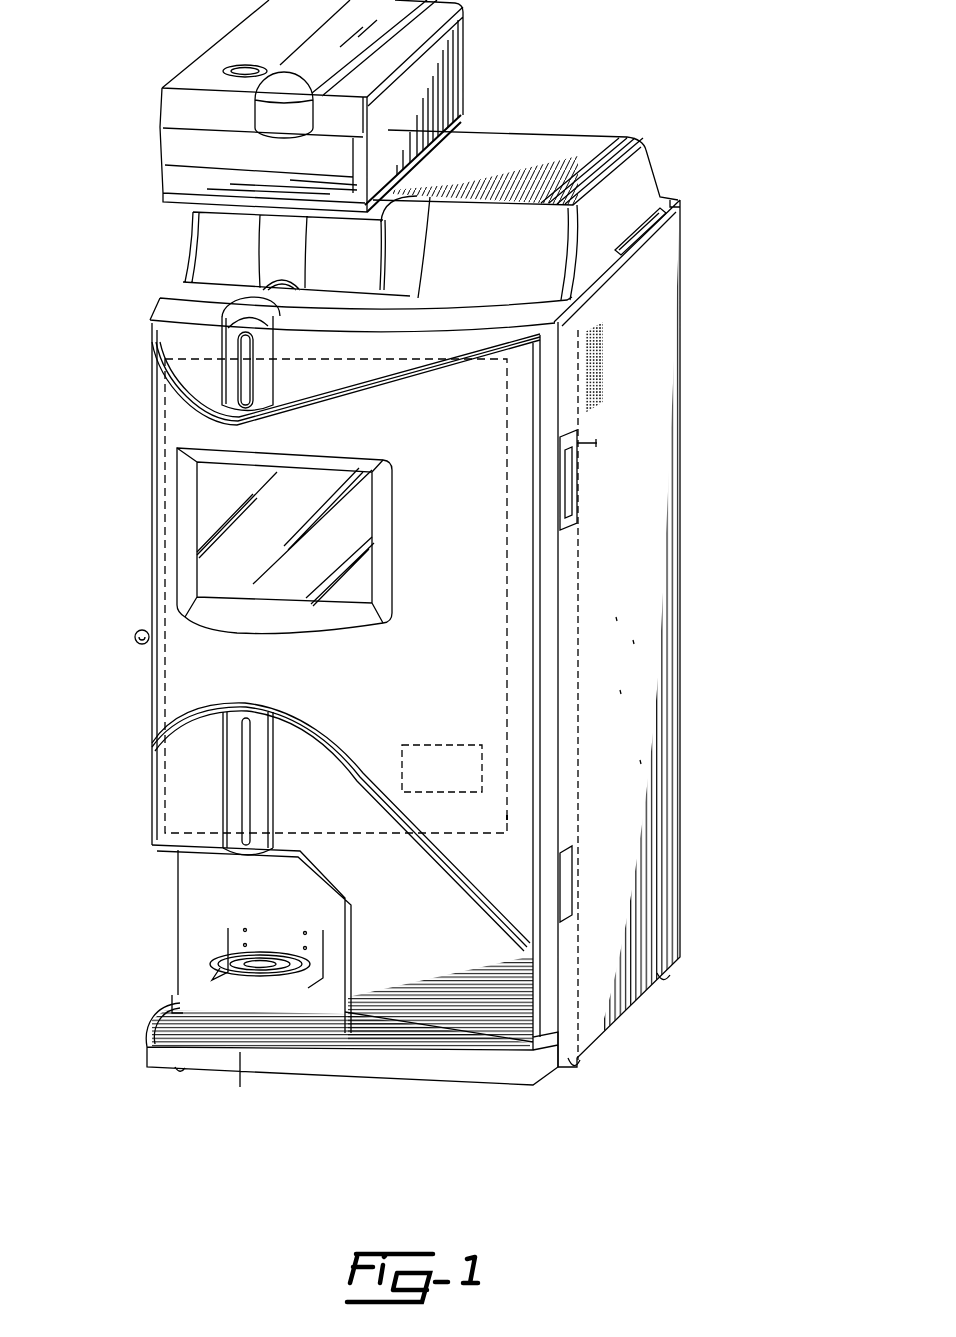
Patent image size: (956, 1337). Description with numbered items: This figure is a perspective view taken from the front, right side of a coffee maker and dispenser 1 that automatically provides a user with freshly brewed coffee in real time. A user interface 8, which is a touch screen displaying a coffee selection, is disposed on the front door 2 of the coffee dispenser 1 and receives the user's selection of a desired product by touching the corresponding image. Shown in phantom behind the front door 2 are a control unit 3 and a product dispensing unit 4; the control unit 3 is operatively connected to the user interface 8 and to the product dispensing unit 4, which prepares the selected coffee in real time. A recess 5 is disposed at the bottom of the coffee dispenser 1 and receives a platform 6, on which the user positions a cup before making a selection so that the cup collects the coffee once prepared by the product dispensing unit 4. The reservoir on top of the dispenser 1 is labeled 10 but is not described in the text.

The coffee maker and dispenser 1 is at (420, 543).
The front door 2 is at (399, 668).
The control unit 3 is at (482, 768).
The product dispensing unit 4 is at (507, 817).
The recess 5 is at (140, 977).
The platform 6 is at (212, 970).
The user interface 8 is at (207, 517).
The water reservoir 10 is at (460, 70).